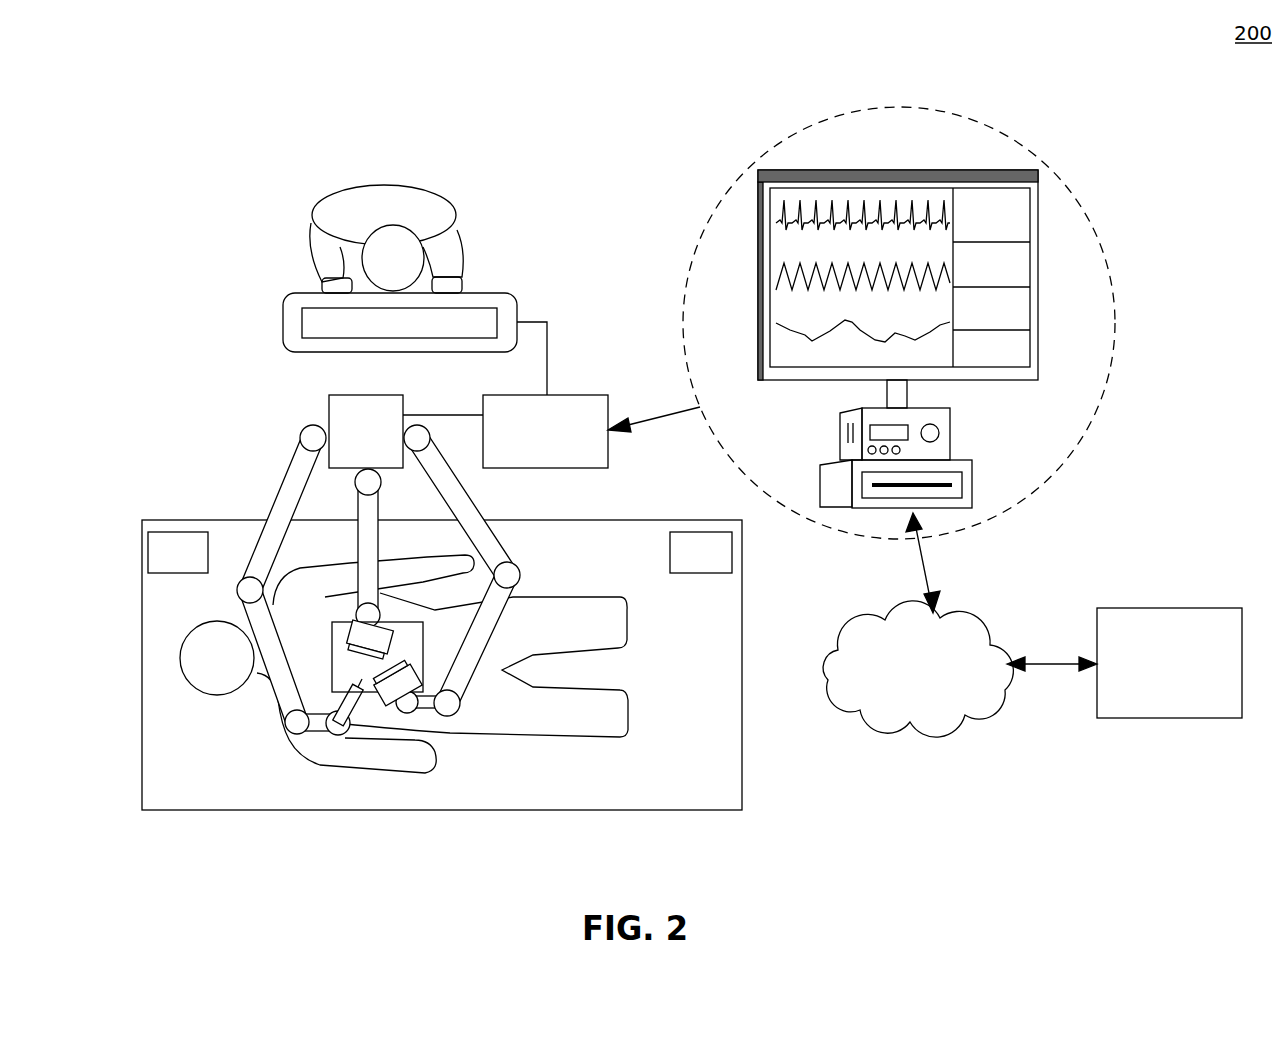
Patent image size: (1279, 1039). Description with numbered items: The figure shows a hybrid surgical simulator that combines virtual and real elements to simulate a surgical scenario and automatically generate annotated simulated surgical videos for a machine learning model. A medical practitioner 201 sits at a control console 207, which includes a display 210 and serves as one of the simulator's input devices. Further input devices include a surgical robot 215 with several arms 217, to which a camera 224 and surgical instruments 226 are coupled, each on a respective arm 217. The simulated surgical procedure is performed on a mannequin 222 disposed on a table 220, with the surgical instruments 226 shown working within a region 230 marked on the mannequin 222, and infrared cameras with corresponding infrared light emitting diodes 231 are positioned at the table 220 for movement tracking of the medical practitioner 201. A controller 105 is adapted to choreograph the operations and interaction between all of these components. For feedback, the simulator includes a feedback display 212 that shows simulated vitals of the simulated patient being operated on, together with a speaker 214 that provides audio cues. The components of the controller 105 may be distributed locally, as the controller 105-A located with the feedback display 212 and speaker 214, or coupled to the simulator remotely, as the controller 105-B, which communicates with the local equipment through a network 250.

The medical practitioner 201 is at (348, 190).
The control console 207 is at (282, 320).
The display 210 is at (399, 323).
The surgical robot 215 is at (366, 431).
The controller 105 is at (545, 431).
The arms 217 is at (272, 500).
The table 220 is at (140, 779).
The mannequin 222 is at (220, 696).
The camera 224 is at (350, 700).
The surgical instruments 226 is at (383, 663).
The surgical site region 230 is at (332, 641).
The infrared cameras and corresponding infrared light emitting diodes 231 is at (440, 552).
The feedback display 212 is at (898, 274).
The speaker 214 is at (930, 233).
The controller 105-A is at (953, 440).
The controller 105-B is at (1169, 663).
The network 250 is at (918, 669).